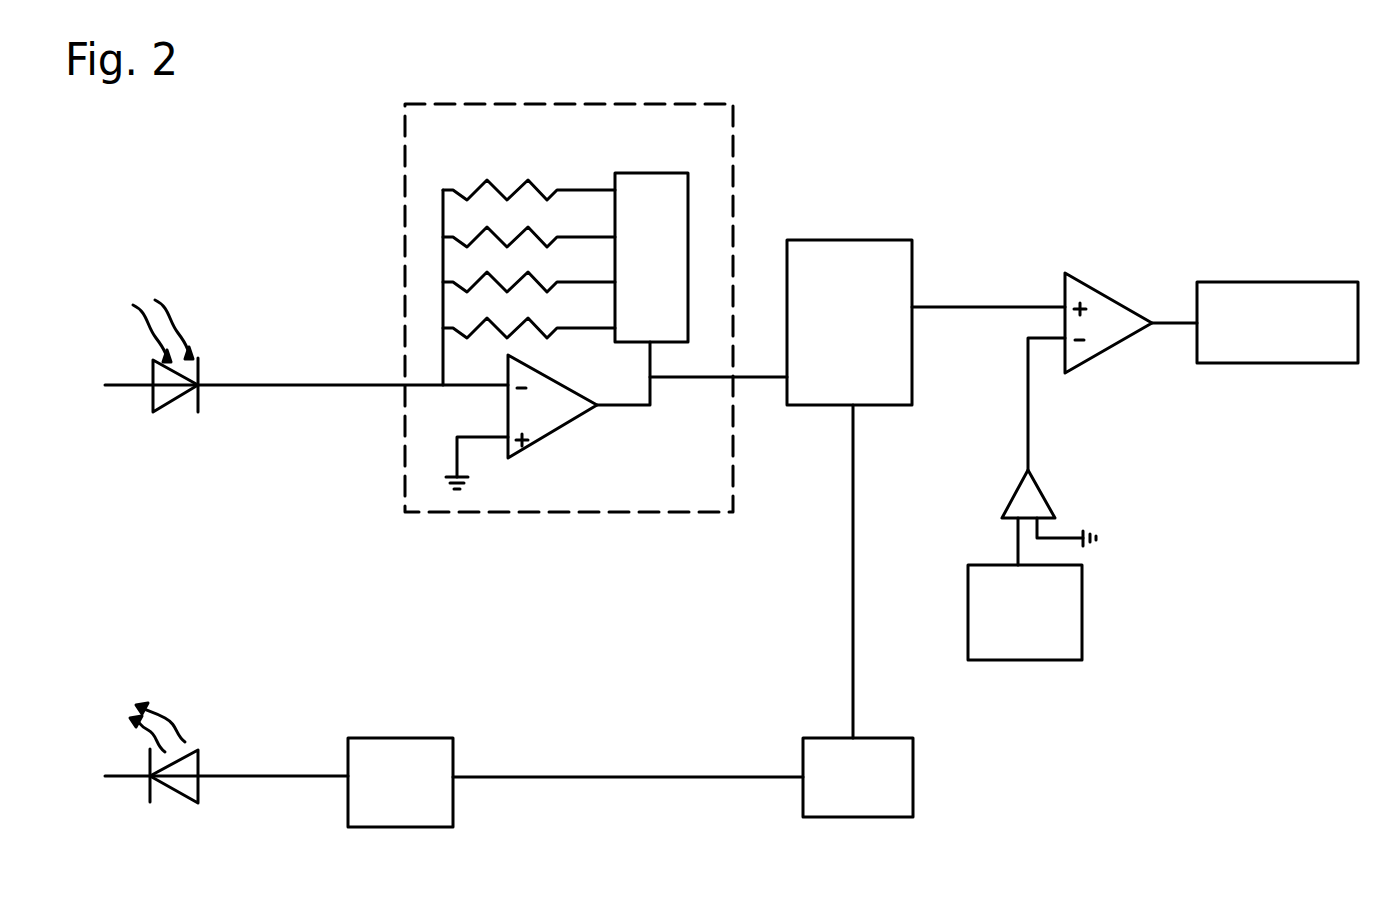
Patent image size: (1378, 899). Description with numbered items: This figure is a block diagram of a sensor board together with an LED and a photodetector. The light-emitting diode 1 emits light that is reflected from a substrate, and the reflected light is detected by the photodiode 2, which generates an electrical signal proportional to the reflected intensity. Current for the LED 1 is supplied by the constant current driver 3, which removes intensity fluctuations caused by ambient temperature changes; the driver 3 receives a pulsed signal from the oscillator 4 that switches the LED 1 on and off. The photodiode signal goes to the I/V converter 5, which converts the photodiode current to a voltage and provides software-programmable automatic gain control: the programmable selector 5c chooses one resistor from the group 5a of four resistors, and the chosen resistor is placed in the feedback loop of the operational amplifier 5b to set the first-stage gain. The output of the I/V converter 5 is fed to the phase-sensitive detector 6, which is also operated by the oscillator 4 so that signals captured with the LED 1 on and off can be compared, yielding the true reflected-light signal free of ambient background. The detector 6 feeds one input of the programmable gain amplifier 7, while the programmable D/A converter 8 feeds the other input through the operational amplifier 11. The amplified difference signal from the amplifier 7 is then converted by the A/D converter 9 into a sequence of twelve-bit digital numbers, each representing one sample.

The light-emitting diode 1 is at (200, 771).
The photodiode 2 is at (167, 388).
The constant current driver 3 is at (440, 807).
The oscillator 4 is at (903, 792).
The I/V converter 5 is at (518, 548).
The group of resistors 5a is at (504, 170).
The operational amplifier 5b is at (545, 410).
The programmable selector 5c is at (651, 257).
The phase-sensitive detector 6 is at (875, 258).
The programmable gain amplifier 7 is at (1113, 313).
The D/A converter 8 is at (1047, 648).
The A/D converter 9 is at (1238, 298).
The operational amplifier 11 is at (1030, 500).